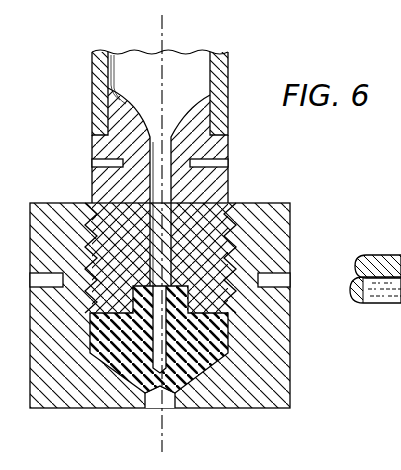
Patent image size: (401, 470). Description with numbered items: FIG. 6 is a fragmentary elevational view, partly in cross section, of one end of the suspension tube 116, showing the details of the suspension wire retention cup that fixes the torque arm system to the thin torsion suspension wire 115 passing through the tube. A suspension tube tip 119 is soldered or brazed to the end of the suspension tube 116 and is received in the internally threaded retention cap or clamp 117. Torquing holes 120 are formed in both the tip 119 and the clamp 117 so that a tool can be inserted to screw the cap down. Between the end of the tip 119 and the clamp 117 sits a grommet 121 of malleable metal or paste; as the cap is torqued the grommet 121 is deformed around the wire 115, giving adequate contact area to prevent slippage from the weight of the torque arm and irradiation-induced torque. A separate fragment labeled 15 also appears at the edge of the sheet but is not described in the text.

The torsion suspension wire 115 is at (165, 36).
The suspension tube 116 is at (229, 72).
The retention clamp 117 is at (291, 390).
The suspension tube tip 119 is at (231, 185).
The torquing holes 120 is at (232, 165).
The grommet 121 is at (203, 372).
The pin 15 is at (375, 299).